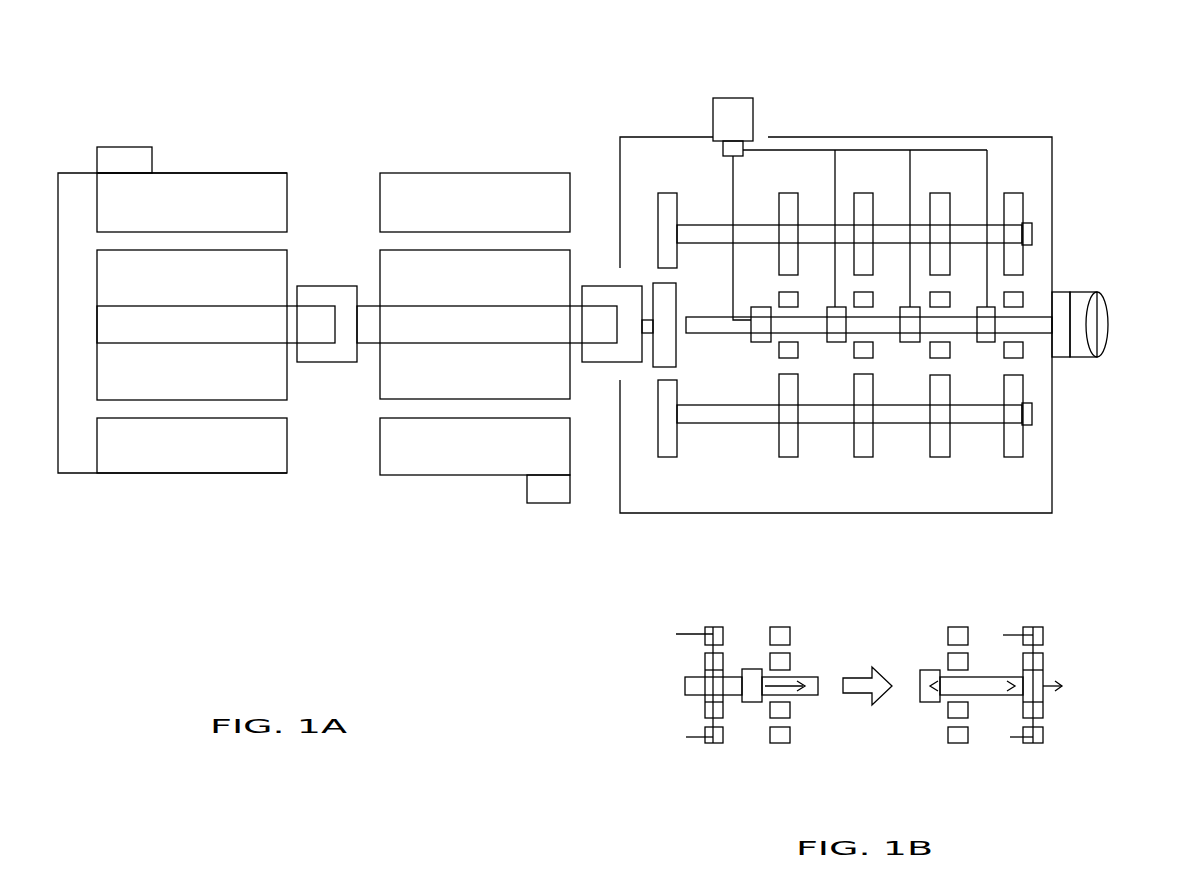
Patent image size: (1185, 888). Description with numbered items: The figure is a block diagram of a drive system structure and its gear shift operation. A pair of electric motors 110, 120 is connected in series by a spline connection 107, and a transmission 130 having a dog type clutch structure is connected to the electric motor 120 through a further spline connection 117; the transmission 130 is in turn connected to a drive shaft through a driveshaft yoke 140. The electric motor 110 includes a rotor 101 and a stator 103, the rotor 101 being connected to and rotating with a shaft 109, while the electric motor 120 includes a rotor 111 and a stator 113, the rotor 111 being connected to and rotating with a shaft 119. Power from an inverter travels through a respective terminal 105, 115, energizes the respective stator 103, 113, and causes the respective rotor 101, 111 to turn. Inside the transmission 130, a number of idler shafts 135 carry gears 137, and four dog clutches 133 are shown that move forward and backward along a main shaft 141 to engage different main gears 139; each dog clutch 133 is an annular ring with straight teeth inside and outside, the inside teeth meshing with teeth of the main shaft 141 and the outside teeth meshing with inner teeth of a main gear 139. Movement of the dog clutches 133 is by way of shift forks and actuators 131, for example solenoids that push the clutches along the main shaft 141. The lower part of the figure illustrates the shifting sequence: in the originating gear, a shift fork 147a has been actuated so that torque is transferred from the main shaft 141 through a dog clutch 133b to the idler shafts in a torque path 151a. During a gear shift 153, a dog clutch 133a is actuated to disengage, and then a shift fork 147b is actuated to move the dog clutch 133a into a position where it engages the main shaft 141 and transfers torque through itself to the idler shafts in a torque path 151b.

In FIG. 1A, the rotor 101 is at (152, 373).
In FIG. 1A, the stator 103 is at (197, 448).
In FIG. 1A, the terminal 105 is at (120, 157).
In FIG. 1A, the spline connection 107 is at (325, 362).
In FIG. 1A, the shaft 109 is at (216, 324).
In FIG. 1A, the electric motor 110 is at (226, 147).
In FIG. 1A, the rotor 111 is at (472, 371).
In FIG. 1A, the stator 113 is at (508, 447).
In FIG. 1A, the terminal 115 is at (556, 488).
In FIG. 1A, the spline connection 117 is at (609, 343).
In FIG. 1A, the shaft 119 is at (487, 324).
In FIG. 1A, the electric motor 120 is at (491, 147).
In FIG. 1A, the transmission 130 is at (904, 102).
In FIG. 1A, the actuator 131 is at (732, 118).
In FIG. 1A, the dog clutch 133 is at (988, 325).
In FIG. 1B, the dog clutch 133a is at (752, 703).
In FIG. 1B, the dog clutch 133b is at (705, 688).
In FIG. 1A, the idler shaft 135 is at (892, 237).
In FIG. 1A, the gear 137 is at (787, 208).
In FIG. 1A, the main gear 139 is at (1013, 340).
In FIG. 1A, the driveshaft yoke 140 is at (1085, 343).
In FIG. 1A, the main shaft 141 is at (1032, 325).
In FIG. 1B, the shift fork 147a is at (705, 643).
In FIG. 1B, the shift fork 147b is at (1043, 637).
In FIG. 1B, the torque path 151a is at (696, 738).
In FIG. 1B, the torque path 151b is at (1018, 738).
In FIG. 1B, the gear shift 153 is at (862, 675).